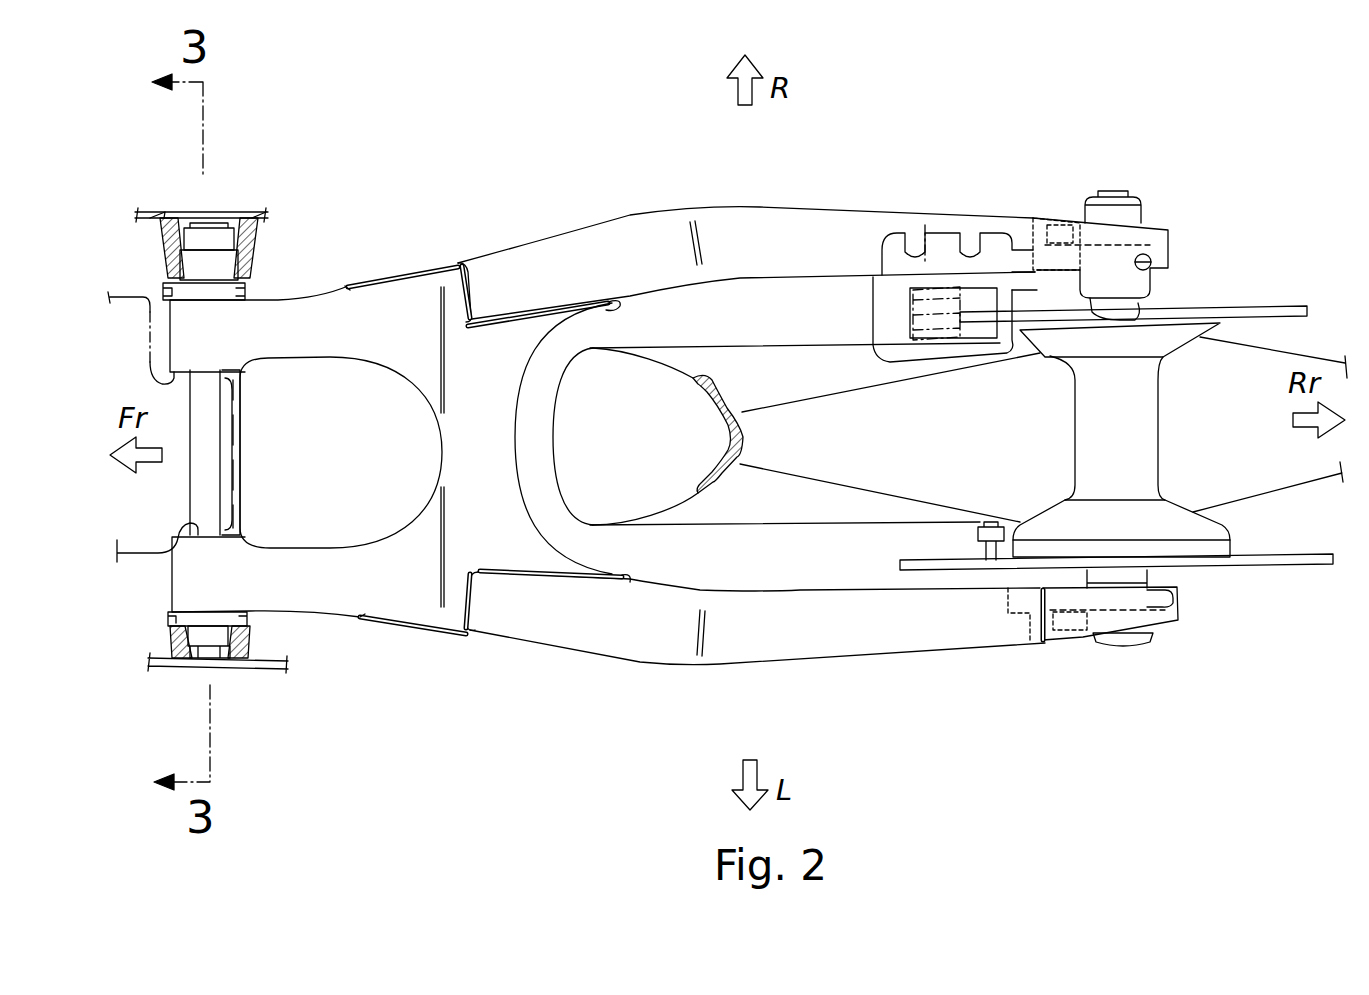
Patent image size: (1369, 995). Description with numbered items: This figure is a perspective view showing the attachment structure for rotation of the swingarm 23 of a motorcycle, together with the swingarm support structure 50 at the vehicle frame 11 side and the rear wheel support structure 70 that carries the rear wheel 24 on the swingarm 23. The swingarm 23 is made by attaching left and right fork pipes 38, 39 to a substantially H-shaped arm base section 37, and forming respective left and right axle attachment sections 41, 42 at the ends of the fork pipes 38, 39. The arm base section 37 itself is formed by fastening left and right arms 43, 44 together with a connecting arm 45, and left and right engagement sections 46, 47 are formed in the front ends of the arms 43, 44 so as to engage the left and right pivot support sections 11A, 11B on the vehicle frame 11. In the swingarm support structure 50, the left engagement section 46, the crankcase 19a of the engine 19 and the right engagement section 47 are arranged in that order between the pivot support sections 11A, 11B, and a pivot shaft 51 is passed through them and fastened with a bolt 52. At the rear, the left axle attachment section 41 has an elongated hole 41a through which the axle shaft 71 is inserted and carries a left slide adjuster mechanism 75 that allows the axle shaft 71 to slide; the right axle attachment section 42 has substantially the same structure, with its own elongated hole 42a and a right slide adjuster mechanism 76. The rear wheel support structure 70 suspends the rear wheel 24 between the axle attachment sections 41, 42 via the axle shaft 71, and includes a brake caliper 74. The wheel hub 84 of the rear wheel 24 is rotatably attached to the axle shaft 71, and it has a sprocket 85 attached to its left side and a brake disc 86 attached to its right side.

The vehicle frame 11 is at (283, 703).
The left pivot support section 11A is at (170, 665).
The right pivot support section 11B is at (167, 217).
The engine 19 is at (281, 452).
The crankcase 19a is at (247, 470).
The swingarm 23 is at (607, 410).
The rear wheel 24 is at (1267, 515).
The arm base section 37 is at (338, 274).
The left fork pipe 38 is at (847, 658).
The right fork pipe 39 is at (810, 210).
The left axle attachment section 41 is at (1149, 668).
The elongated hole 41a is at (1165, 598).
The right axle attachment section 42 is at (1151, 221).
The elongated hole 42a is at (1152, 262).
The left arm 43 is at (322, 573).
The right arm 44 is at (300, 330).
The connecting arm 45 is at (440, 453).
The left engagement section 46 is at (222, 565).
The right engagement section 47 is at (212, 314).
The swingarm support structure 50 is at (225, 189).
The pivot shaft 51 is at (198, 216).
The bolt 52 is at (237, 665).
The rear wheel support structure 70 is at (1103, 415).
The axle shaft 71 is at (1128, 645).
The brake caliper 74 is at (892, 213).
The left slide adjuster mechanism 75 is at (1073, 630).
The right slide adjuster mechanism 76 is at (1052, 214).
The wheel hub 84 is at (740, 470).
The sprocket 85 is at (1240, 572).
The brake disc 86 is at (1275, 306).